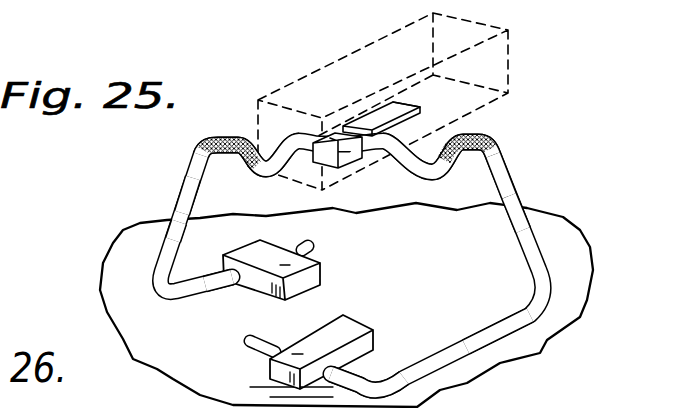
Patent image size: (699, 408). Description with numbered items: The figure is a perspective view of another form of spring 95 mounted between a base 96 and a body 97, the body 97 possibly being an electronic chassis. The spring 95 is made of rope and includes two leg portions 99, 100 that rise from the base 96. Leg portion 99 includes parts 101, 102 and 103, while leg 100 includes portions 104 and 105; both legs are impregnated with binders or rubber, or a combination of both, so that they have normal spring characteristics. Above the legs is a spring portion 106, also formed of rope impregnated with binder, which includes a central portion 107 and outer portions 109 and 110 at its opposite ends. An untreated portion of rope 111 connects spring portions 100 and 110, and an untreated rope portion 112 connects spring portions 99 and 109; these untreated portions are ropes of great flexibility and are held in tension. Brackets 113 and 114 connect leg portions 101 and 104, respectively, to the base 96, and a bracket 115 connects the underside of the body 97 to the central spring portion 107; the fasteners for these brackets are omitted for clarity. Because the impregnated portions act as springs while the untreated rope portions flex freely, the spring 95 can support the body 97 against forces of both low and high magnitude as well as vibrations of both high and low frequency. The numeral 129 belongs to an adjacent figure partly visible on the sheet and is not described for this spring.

In FIG. 25, the spring 95 is at (544, 154).
In FIG. 25, the base 96 is at (376, 305).
In FIG. 25, the body 97 is at (429, 101).
In FIG. 25, the leg portion 99 is at (545, 175).
In FIG. 25, the leg portion 100 is at (155, 187).
In FIG. 25, the part of leg portion 101 is at (377, 357).
In FIG. 25, the part of leg portion 102 is at (486, 315).
In FIG. 25, the part of leg portion 103 is at (483, 226).
In FIG. 25, the portion of leg 104 is at (202, 318).
In FIG. 25, the portion of leg 105 is at (123, 237).
In FIG. 25, the spring portion 106 is at (359, 171).
In FIG. 25, the central portion 107 is at (403, 116).
In FIG. 25, the outer portion 109 is at (433, 173).
In FIG. 25, the outer portion 110 is at (260, 178).
In FIG. 25, the untreated portion of rope 111 is at (228, 126).
In FIG. 25, the untreated rope portion 112 is at (503, 124).
In FIG. 25, the bracket 113 is at (328, 339).
In FIG. 25, the bracket 114 is at (304, 270).
In FIG. 25, the bracket 115 is at (366, 73).
In FIG. 26, the element of FIG. 26 129 is at (60, 404).